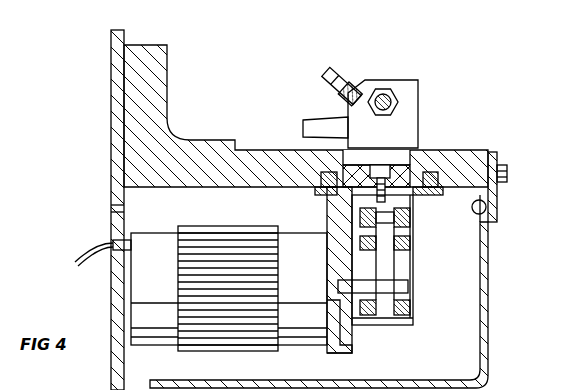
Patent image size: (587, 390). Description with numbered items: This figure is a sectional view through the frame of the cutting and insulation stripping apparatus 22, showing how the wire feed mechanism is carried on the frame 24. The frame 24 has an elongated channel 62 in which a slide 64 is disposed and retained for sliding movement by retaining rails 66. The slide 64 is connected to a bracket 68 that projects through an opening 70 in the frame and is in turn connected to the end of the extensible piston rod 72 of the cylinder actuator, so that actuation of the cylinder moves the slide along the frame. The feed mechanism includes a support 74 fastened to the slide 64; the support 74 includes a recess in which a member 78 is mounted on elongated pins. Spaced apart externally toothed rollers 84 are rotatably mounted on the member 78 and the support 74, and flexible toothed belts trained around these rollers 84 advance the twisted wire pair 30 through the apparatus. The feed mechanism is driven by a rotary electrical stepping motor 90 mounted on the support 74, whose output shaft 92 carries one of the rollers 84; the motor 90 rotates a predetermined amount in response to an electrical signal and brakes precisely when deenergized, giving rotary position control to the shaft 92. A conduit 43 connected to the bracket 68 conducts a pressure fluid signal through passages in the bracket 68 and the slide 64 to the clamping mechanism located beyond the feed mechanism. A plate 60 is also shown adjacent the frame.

The cutting and insulation stripping apparatus 22 is at (231, 74).
The frame 24 is at (212, 140).
The twisted wire pair 30 is at (405, 283).
The conduit 43 is at (354, 50).
The frame plate 60 is at (111, 66).
The channel 62 is at (445, 152).
The slide 64 is at (396, 176).
The retaining rails 66 is at (320, 190).
The bracket 68 is at (418, 87).
The opening 70 is at (350, 143).
The piston rod 72 is at (381, 95).
The support 74 is at (327, 229).
The member 78 is at (405, 222).
The toothed rollers 84 is at (407, 245).
The stepping motor 90 is at (291, 334).
The output shaft 92 is at (363, 296).